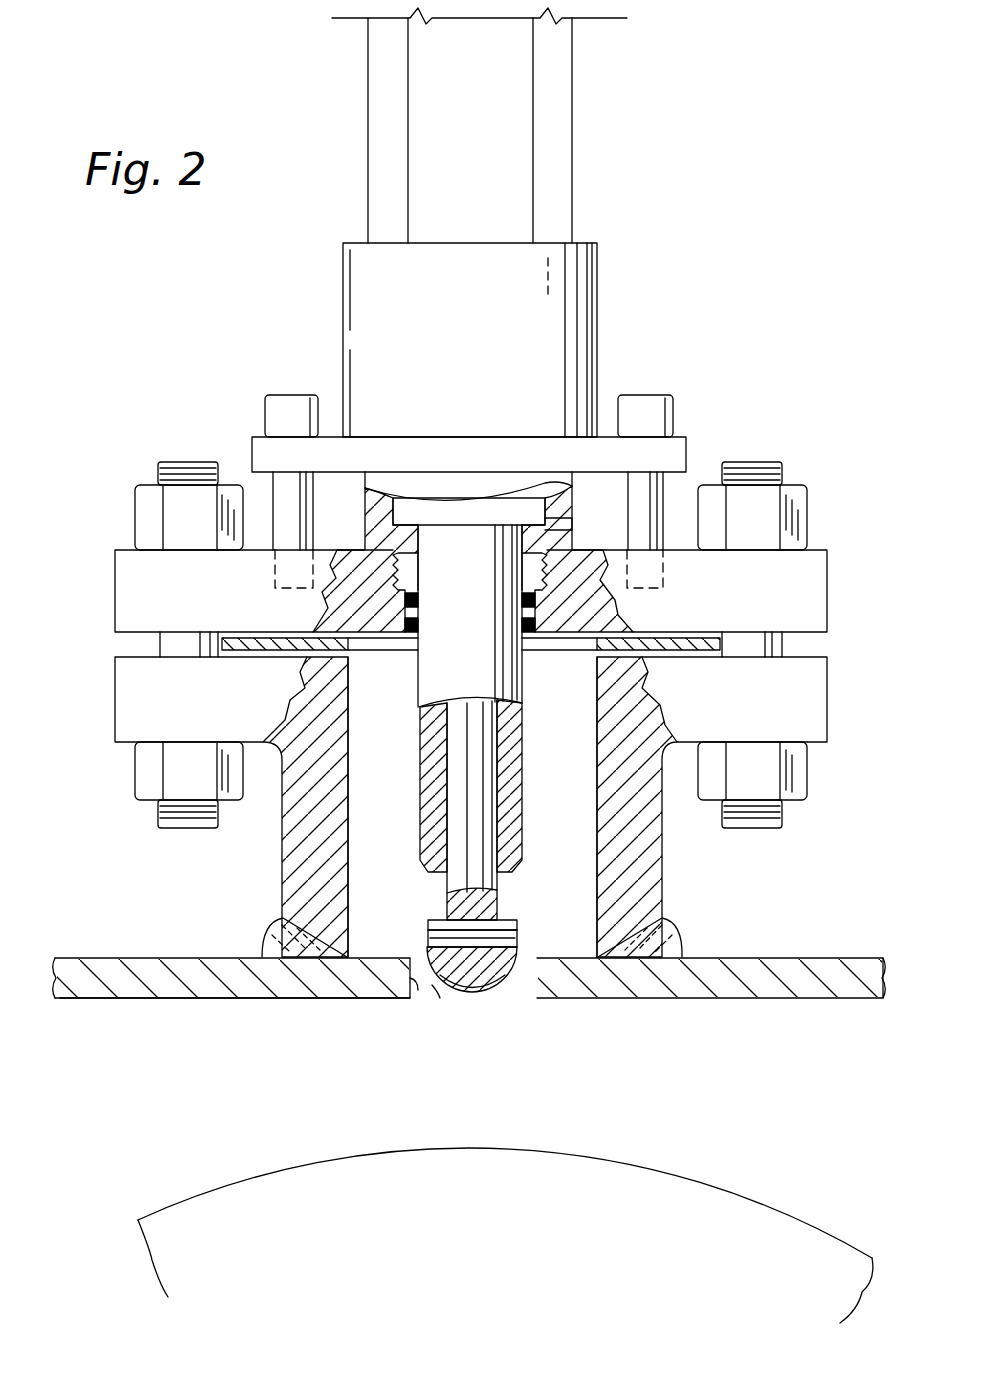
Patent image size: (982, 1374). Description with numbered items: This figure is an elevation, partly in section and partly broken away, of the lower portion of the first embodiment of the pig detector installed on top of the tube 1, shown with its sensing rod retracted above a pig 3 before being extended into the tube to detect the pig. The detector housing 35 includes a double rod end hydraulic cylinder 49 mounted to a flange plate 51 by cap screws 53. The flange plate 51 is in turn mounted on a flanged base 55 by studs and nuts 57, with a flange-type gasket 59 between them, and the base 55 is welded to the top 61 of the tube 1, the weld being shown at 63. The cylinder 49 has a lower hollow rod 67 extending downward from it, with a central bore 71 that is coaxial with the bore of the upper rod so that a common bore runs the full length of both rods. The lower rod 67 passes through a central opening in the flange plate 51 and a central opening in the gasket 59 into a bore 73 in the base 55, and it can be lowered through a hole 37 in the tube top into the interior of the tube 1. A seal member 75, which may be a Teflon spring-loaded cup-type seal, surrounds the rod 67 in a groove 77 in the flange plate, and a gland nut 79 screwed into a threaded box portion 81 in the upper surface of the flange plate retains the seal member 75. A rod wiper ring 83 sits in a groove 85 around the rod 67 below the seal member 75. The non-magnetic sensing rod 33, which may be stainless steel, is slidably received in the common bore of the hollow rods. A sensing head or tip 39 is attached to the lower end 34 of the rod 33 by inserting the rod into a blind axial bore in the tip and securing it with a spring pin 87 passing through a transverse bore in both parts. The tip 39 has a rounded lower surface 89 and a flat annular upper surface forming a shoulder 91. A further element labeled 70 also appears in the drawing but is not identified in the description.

The tube 1 is at (101, 1000).
The pig 3 is at (600, 1160).
The non-magnetic sensing rod 33 is at (447, 898).
The lower end 34 is at (479, 1000).
The detector housing 35 is at (341, 288).
The hole 37 is at (418, 990).
The sensing head or tip 39 is at (439, 998).
The double rod end hydraulic cylinder 49 is at (575, 150).
The flange plate 51 is at (115, 562).
The cap screws 53 is at (292, 395).
The flanged base 55 is at (115, 674).
The studs and nuts 57 is at (184, 462).
The flange-type gasket 59 is at (241, 638).
The top 61 is at (820, 958).
The weld 63 is at (672, 923).
The lower hollow rod 67 is at (420, 778).
The sleeve 70 is at (506, 872).
The central bore 71 is at (496, 752).
The bore 73 is at (352, 696).
The seal member 75 is at (538, 603).
The groove 77 is at (419, 591).
The gland nut 79 is at (576, 492).
The threaded box portion 81 is at (402, 566).
The rod wiper ring 83 is at (523, 626).
The groove 85 is at (416, 604).
The spring pin 87 is at (518, 937).
The rounded lower surface 89 is at (476, 1000).
The shoulder 91 is at (517, 922).